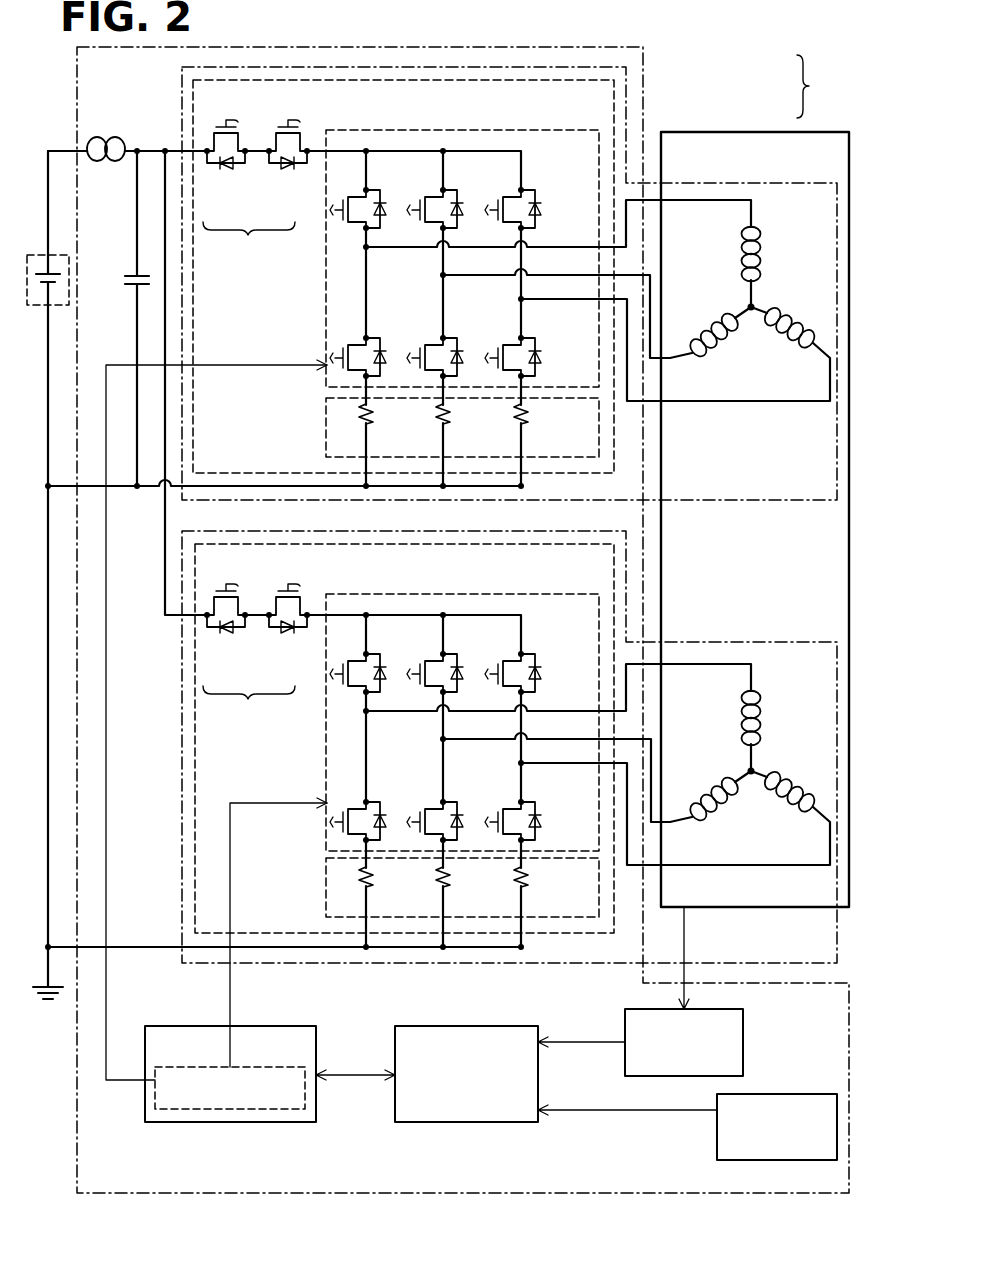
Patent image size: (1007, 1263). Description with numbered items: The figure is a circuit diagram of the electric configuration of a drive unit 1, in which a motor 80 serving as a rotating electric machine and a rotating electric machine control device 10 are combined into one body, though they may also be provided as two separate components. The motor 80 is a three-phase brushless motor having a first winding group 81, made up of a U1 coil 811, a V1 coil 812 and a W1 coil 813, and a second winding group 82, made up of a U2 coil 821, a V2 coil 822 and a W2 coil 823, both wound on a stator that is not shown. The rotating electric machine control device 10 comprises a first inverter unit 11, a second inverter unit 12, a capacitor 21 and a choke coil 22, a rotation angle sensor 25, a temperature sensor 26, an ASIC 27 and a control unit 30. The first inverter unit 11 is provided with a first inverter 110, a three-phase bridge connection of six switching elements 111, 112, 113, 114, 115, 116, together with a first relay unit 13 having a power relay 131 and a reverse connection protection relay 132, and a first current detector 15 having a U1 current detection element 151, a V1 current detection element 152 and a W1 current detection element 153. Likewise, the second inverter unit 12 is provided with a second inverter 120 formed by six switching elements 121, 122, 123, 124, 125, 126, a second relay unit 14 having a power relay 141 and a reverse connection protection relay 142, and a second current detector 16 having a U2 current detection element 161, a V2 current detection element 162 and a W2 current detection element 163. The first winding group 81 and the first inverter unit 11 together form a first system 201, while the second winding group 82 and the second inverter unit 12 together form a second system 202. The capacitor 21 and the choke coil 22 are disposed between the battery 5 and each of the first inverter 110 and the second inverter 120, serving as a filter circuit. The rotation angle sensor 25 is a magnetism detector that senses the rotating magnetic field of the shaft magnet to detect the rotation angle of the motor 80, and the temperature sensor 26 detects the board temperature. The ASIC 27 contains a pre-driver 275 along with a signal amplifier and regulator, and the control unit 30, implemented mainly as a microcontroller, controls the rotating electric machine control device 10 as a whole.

The drive unit 1 is at (812, 86).
The battery 5 is at (40, 306).
The rotating electric machine control device 10 is at (643, 95).
The first inverter unit 11 is at (193, 100).
The second inverter unit 12 is at (195, 655).
The first relay unit 13 is at (249, 243).
The second relay unit 14 is at (249, 705).
The first current detector 15 is at (326, 412).
The second current detector 16 is at (326, 876).
The capacitor 21 is at (127, 295).
The choke coil 22 is at (108, 163).
The rotation angle sensor 25 is at (744, 1030).
The temperature sensor 26 is at (717, 1147).
The ASIC 27 is at (230, 1101).
The control unit 30 is at (421, 1122).
The motor 80 is at (745, 132).
The first winding group 81 is at (752, 287).
The second winding group 82 is at (751, 750).
The first inverter 110 is at (487, 131).
The switching element 111 is at (381, 188).
The switching element 112 is at (458, 188).
The switching element 113 is at (536, 188).
The switching element 114 is at (381, 336).
The switching element 115 is at (458, 336).
The switching element 116 is at (536, 336).
The second inverter 120 is at (487, 595).
The switching element 121 is at (381, 652).
The switching element 122 is at (458, 652).
The switching element 123 is at (536, 652).
The switching element 124 is at (381, 800).
The switching element 125 is at (458, 800).
The switching element 126 is at (536, 800).
The power relay 131 is at (209, 166).
The reverse connection protection relay 132 is at (275, 166).
The power relay 141 is at (209, 630).
The reverse connection protection relay 142 is at (275, 630).
The U1 current detection element 151 is at (374, 408).
The V1 current detection element 152 is at (451, 408).
The W1 current detection element 153 is at (529, 408).
The U2 current detection element 161 is at (374, 871).
The V2 current detection element 162 is at (451, 871).
The W2 current detection element 163 is at (529, 871).
The first system 201 is at (796, 501).
The second system 202 is at (726, 642).
The pre-driver 275 is at (266, 1110).
The U1 coil 811 is at (758, 228).
The V1 coil 812 is at (699, 315).
The W1 coil 813 is at (809, 315).
The U2 coil 821 is at (758, 691).
The V2 coil 822 is at (699, 779).
The W2 coil 823 is at (809, 779).